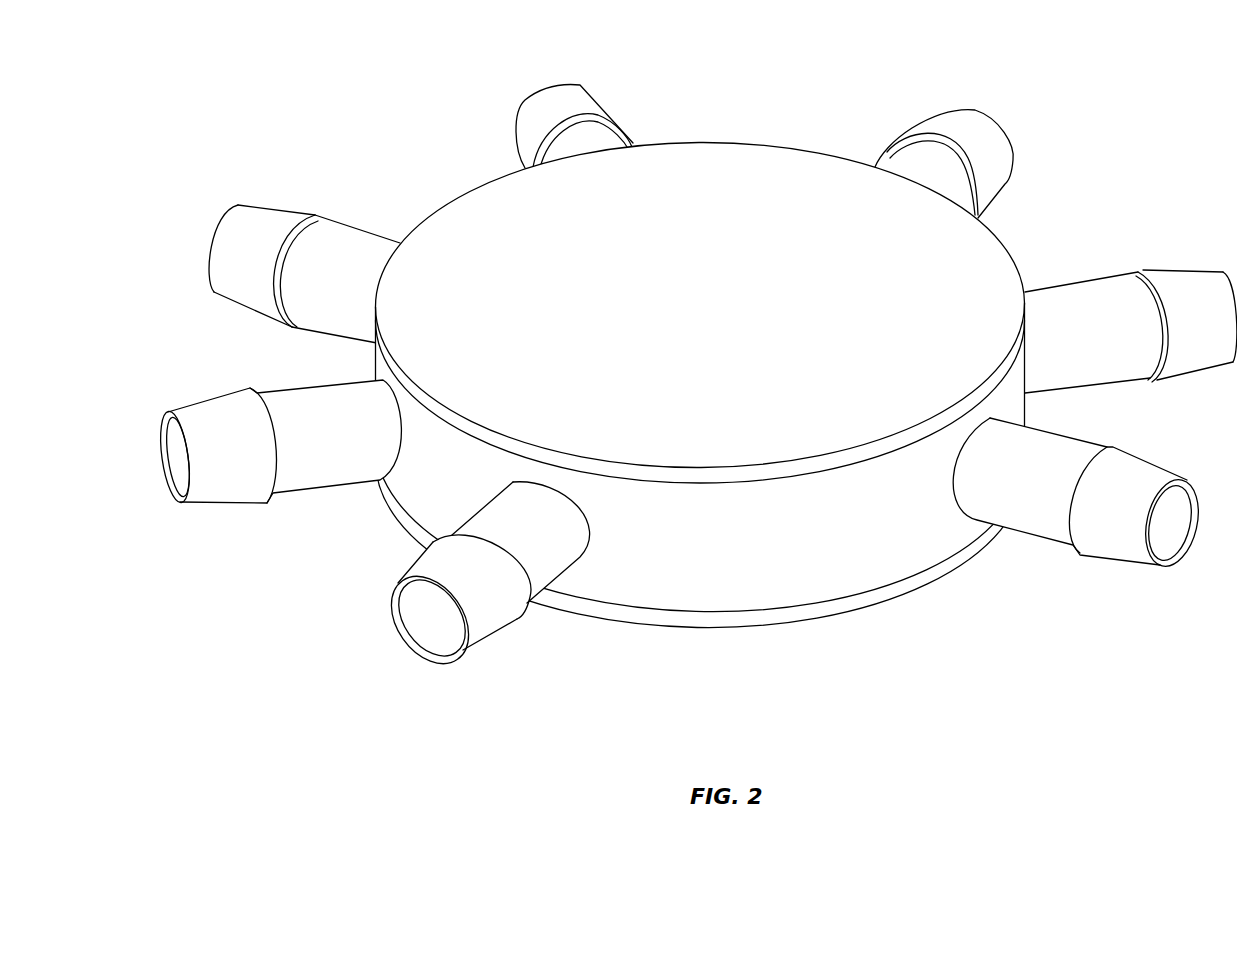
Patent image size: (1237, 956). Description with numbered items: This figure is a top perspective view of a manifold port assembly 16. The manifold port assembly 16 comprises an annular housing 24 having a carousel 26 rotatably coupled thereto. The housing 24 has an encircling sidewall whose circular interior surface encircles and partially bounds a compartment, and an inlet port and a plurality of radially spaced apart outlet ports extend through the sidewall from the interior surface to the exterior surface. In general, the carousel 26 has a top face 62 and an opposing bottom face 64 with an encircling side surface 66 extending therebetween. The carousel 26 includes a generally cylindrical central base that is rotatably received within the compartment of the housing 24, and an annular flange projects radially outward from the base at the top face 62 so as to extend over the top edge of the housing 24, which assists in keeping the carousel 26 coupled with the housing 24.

The manifold port assembly 16 is at (1013, 638).
The housing 24 is at (802, 573).
The carousel 26 is at (805, 427).
The top face 62 is at (737, 185).
The bottom face 64 is at (700, 626).
The side surface 66 is at (683, 471).